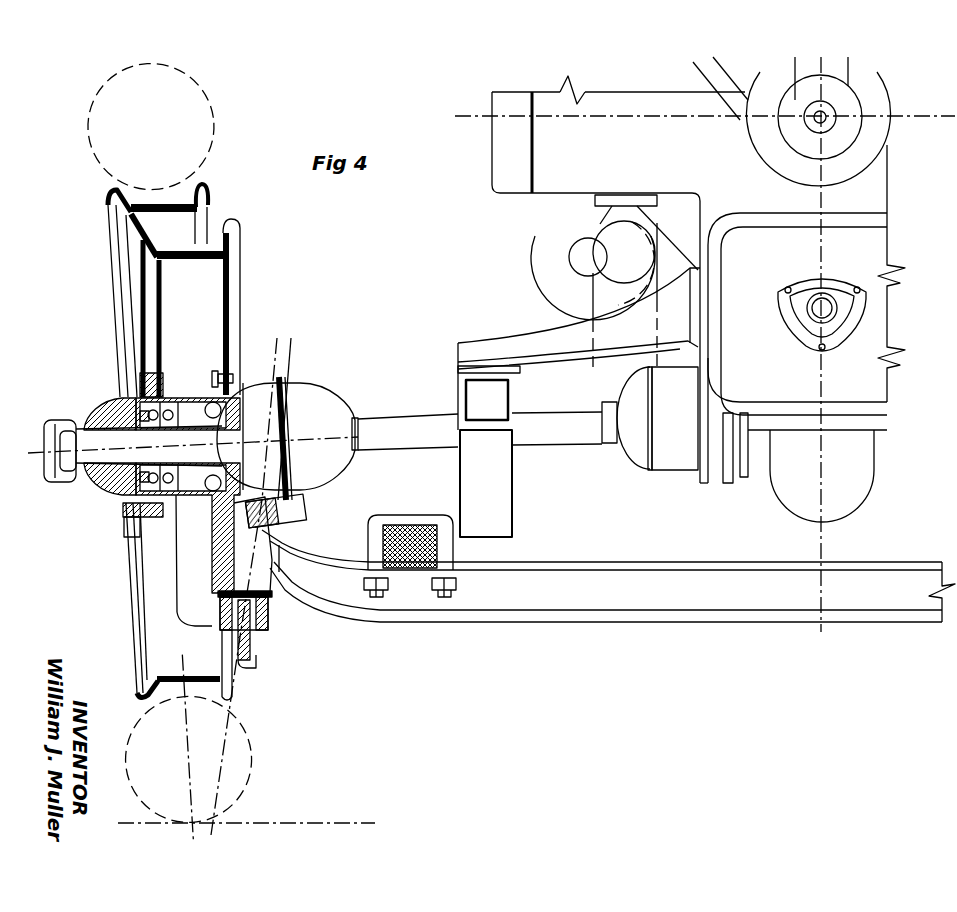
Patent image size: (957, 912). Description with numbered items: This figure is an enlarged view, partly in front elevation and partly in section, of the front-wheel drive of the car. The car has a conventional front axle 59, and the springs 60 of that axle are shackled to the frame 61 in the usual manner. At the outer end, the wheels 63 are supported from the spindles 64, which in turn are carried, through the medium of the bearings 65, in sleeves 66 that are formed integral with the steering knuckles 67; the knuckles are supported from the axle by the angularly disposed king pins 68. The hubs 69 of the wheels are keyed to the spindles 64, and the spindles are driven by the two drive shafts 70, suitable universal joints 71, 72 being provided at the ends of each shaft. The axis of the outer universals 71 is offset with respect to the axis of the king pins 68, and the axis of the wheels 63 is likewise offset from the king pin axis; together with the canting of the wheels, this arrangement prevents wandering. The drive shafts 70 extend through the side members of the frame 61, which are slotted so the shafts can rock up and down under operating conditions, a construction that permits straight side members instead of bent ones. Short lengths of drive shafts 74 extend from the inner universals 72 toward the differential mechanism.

The front axle 59 is at (582, 592).
The springs 60 is at (410, 530).
The frame 61 is at (493, 495).
The wheels 63 is at (163, 638).
The spindles 64 is at (113, 453).
The bearings 65 is at (200, 397).
The sleeves 66 is at (205, 497).
The steering knuckles 67 is at (270, 620).
The king pins 68 is at (263, 518).
The hubs 69 is at (108, 402).
The drive shafts 70 is at (405, 427).
The universal joint 71 is at (295, 395).
The universal joint 72 is at (650, 418).
The short drive shafts 74 is at (720, 423).